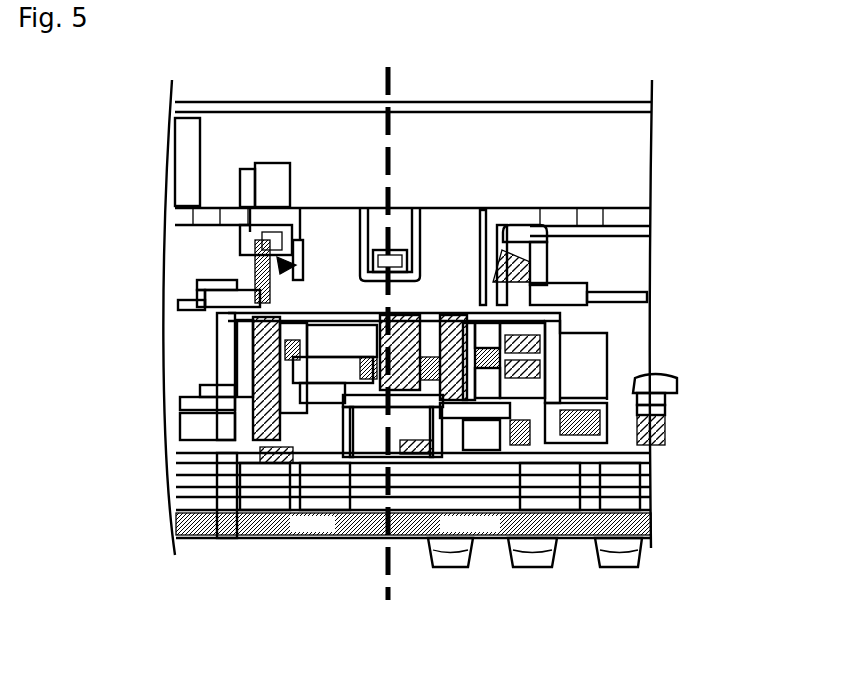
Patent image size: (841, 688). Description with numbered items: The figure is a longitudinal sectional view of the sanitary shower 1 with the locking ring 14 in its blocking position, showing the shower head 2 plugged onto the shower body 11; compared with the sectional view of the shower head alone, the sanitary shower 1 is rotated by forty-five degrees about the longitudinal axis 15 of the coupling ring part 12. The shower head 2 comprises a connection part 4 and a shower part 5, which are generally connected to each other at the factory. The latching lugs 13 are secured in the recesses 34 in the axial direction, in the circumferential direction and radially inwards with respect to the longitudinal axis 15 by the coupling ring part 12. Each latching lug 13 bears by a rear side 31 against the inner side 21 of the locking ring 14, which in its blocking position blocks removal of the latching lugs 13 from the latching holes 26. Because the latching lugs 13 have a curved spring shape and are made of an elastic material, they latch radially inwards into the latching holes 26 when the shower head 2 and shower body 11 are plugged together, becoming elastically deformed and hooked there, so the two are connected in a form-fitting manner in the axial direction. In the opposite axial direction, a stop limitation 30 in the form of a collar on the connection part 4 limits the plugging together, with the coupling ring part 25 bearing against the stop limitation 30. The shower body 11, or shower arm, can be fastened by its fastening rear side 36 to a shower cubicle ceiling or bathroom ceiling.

The sanitary shower 1 is at (461, 317).
The shower head 2 is at (613, 400).
The connection part 4 is at (553, 337).
The shower part 5 is at (243, 378).
The shower body 11 is at (618, 220).
The coupling ring part 12 is at (518, 243).
The latching lugs 13 is at (273, 265).
The locking ring 14 is at (262, 238).
The longitudinal axis 15 is at (393, 572).
The inner side 21 is at (255, 290).
The coupling ring part 25 is at (490, 303).
The latching holes 26 is at (495, 285).
The stop limitation 30 is at (293, 312).
The rear side 31 is at (258, 248).
The recesses 34 is at (520, 277).
The fastening rear side 36 is at (618, 108).